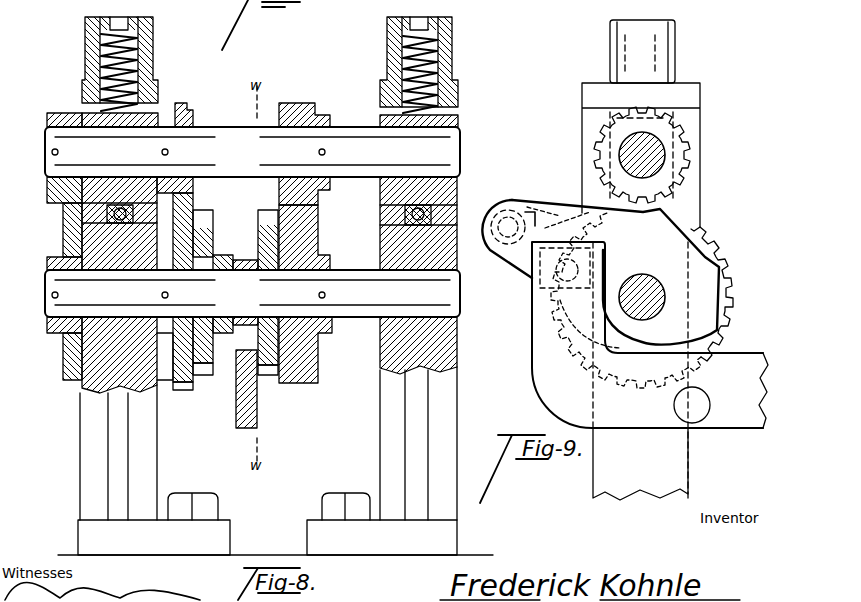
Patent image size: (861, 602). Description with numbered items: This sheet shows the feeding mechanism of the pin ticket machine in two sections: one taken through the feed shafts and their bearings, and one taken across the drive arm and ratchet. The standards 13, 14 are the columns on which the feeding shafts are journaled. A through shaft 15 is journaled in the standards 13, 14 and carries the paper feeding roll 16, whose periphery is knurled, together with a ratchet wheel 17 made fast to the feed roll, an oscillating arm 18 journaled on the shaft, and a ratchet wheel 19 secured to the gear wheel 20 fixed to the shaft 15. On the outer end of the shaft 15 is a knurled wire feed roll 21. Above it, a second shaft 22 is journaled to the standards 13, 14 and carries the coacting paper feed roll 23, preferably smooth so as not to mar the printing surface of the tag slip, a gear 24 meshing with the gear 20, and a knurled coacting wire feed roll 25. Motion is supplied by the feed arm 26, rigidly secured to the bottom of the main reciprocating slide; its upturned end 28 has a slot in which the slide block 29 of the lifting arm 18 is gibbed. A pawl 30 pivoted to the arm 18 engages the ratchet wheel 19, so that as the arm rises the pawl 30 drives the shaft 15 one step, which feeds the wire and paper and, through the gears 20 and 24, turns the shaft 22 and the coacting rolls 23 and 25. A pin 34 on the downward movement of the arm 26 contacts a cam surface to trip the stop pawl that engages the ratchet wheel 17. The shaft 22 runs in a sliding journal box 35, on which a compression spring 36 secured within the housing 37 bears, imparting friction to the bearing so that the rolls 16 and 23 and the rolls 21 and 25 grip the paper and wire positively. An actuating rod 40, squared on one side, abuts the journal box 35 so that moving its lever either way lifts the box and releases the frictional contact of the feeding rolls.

In FIG. 8, the standard 13 is at (148, 437).
In FIG. 9, the standard 13 is at (703, 136).
In FIG. 8, the standard 14 is at (450, 396).
In FIG. 8, the through shaft 15 is at (450, 297).
In FIG. 9, the through shaft 15 is at (666, 298).
In FIG. 8, the paper feeding roll 16 is at (320, 232).
In FIG. 8, the ratchet wheel 17 is at (268, 212).
In FIG. 8, the oscillating arm 18 is at (220, 257).
In FIG. 9, the oscillating arm 18 is at (535, 205).
In FIG. 8, the ratchet wheel 19 is at (198, 212).
In FIG. 9, the ratchet wheel 19 is at (660, 232).
In FIG. 8, the gear wheel 20 is at (190, 387).
In FIG. 9, the gear wheel 20 is at (722, 238).
In FIG. 8, the wire feed roll 21 is at (63, 232).
In FIG. 8, the shaft 22 is at (452, 150).
In FIG. 9, the shaft 22 is at (666, 165).
In FIG. 8, the coacting paper feed roll 23 is at (298, 103).
In FIG. 8, the gear 24 is at (180, 103).
In FIG. 9, the gear 24 is at (684, 126).
In FIG. 8, the coacting wire feed roll 25 is at (58, 113).
In FIG. 8, the feed arm 26 is at (260, 418).
In FIG. 9, the feed arm 26 is at (727, 360).
In FIG. 9, the upturned end 28 is at (537, 322).
In FIG. 9, the slide block 29 is at (541, 274).
In FIG. 9, the pawl 30 is at (532, 222).
In FIG. 9, the pin 34 is at (711, 408).
In FIG. 8, the sliding journal box 35 is at (60, 192).
In FIG. 8, the compression spring 36 is at (140, 52).
In FIG. 8, the housing 37 is at (155, 25).
In FIG. 9, the housing 37 is at (680, 52).
In FIG. 8, the actuating rod 40 is at (63, 250).